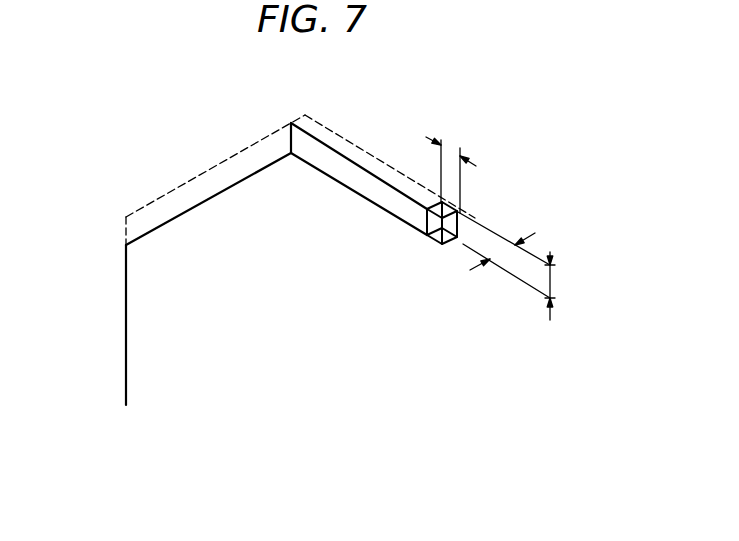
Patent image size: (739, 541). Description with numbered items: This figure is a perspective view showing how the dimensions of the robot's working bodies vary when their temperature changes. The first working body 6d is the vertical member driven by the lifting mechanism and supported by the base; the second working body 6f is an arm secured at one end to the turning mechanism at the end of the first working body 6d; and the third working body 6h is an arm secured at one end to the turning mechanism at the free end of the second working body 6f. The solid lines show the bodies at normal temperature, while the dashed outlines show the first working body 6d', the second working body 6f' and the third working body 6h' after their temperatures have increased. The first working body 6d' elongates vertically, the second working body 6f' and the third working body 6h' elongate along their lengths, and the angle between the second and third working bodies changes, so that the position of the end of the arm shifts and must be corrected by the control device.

The first working body 6d is at (93, 325).
The first working body at increased temperature 6d' is at (93, 235).
The second working body 6f is at (208, 203).
The second working body at increased temperature 6f' is at (215, 166).
The third working body 6h is at (374, 188).
The third working body at increased temperature 6h' is at (390, 149).